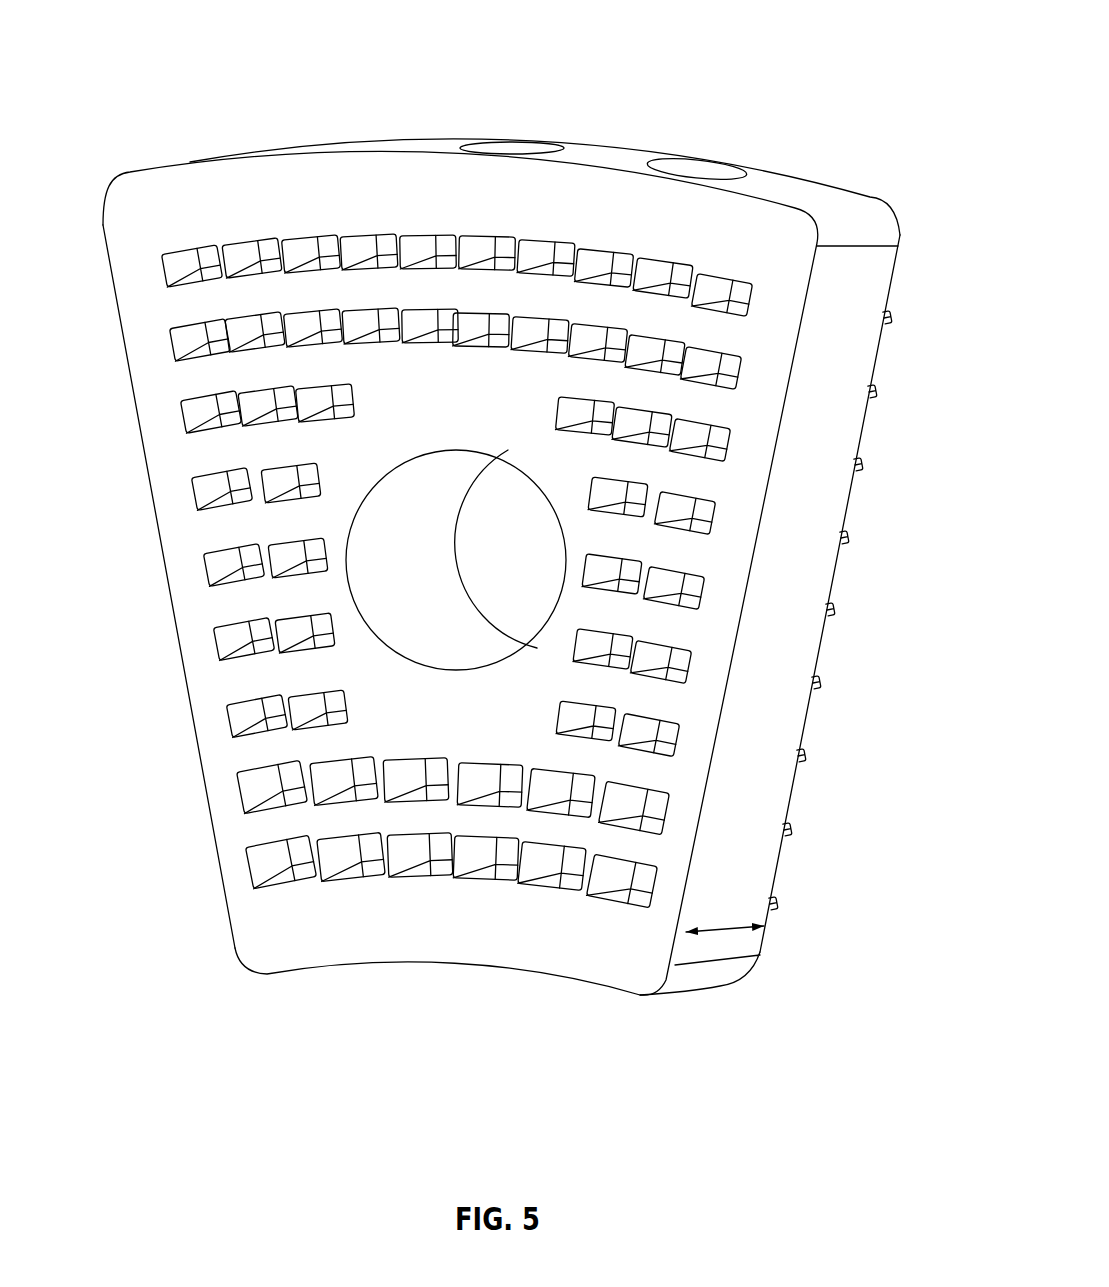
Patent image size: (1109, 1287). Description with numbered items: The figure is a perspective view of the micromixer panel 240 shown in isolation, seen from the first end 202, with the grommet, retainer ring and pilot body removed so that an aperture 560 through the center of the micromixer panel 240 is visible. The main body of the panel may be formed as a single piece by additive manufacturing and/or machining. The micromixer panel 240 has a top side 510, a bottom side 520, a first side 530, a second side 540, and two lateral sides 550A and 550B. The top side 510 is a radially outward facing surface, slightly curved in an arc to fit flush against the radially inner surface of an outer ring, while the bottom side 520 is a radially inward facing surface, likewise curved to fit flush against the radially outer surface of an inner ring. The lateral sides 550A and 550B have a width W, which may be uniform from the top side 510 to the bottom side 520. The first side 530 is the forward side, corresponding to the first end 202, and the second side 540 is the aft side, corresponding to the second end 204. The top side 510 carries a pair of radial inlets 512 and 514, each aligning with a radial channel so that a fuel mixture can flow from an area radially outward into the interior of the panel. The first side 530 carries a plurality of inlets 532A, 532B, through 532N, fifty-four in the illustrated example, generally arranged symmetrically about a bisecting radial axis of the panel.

The micromixer panel 240 is at (824, 37).
The first end 202 is at (156, 744).
The second end 204 is at (905, 352).
The top side 510 is at (803, 182).
The radial inlet 512 is at (700, 170).
The radial inlet 514 is at (522, 145).
The bottom side 520 is at (408, 968).
The first side 530 is at (130, 186).
The inlet 532A is at (197, 258).
The inlet 532B is at (245, 252).
The inlet 532N is at (633, 897).
The second side 540 is at (872, 436).
The lateral side 550A is at (786, 703).
The lateral side 550B is at (212, 886).
The aperture 560 is at (398, 642).
The width W is at (765, 926).